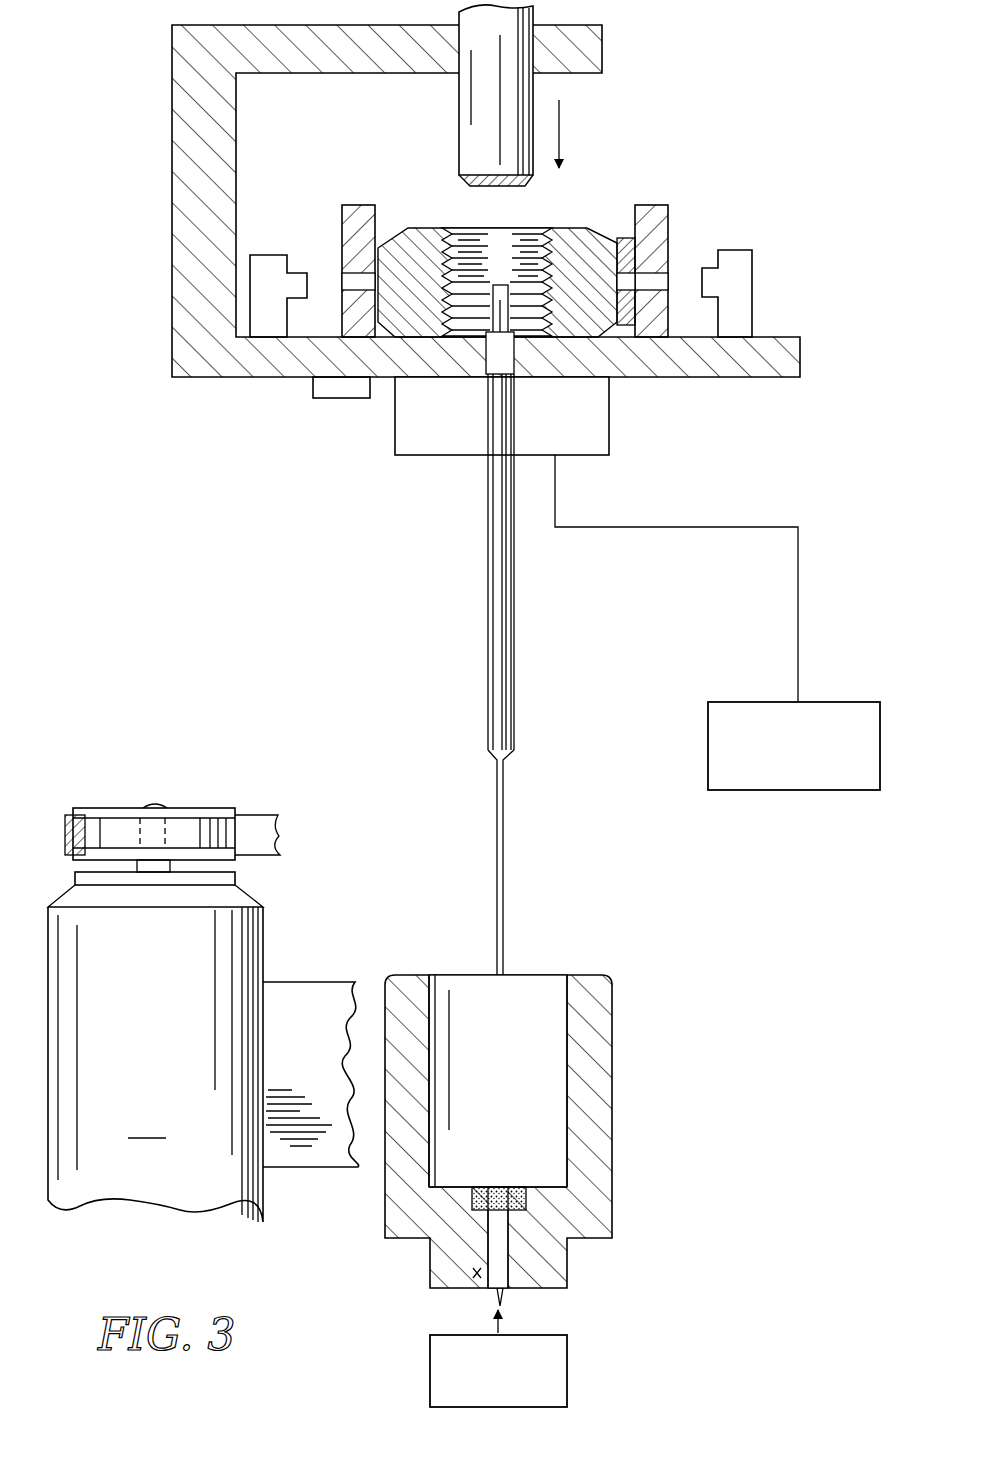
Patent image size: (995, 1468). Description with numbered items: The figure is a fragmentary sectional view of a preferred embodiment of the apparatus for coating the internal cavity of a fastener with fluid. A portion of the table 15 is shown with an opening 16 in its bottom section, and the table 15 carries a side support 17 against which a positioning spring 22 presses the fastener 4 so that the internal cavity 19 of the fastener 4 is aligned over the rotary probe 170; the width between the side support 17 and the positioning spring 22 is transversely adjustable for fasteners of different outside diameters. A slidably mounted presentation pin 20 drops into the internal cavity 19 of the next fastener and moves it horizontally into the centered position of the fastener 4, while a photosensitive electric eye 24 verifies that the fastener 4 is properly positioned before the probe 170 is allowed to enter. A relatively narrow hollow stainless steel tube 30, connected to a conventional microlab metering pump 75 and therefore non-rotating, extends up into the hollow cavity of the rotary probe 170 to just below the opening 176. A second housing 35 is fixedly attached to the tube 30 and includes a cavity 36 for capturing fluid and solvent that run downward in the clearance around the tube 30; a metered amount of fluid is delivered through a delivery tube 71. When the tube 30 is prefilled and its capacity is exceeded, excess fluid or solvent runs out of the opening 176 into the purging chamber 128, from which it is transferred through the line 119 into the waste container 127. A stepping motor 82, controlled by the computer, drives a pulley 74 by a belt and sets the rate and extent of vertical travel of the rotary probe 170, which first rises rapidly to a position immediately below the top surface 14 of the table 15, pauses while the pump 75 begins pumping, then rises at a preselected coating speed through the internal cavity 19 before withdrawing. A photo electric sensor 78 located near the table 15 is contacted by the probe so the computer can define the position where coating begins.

The fastener 4 is at (615, 240).
The top surface of table 14 is at (333, 358).
The table 15 is at (331, 355).
The opening 16 is at (482, 368).
The side support 17 is at (375, 215).
The internal cavity of fastener 19 is at (449, 298).
The presentation pin 20 is at (475, 148).
The positioning spring 22 is at (636, 248).
The photosensitive electric eye 24 is at (307, 290).
The hollow stainless steel tube 30 is at (505, 560).
The second housing 35 is at (636, 1107).
The cavity 36 is at (560, 1168).
The delivery tube 71 is at (540, 1272).
The pulley 74 is at (213, 808).
The metering pump 75 is at (498, 1358).
The photo electric sensor 78 is at (318, 392).
The stepping motor 82 is at (203, 1047).
The line 119 is at (738, 527).
The waste container 127 is at (790, 792).
The purging chamber 128 is at (610, 413).
The rotary probe 170 is at (486, 528).
The opening in rotary probe 176 is at (503, 283).